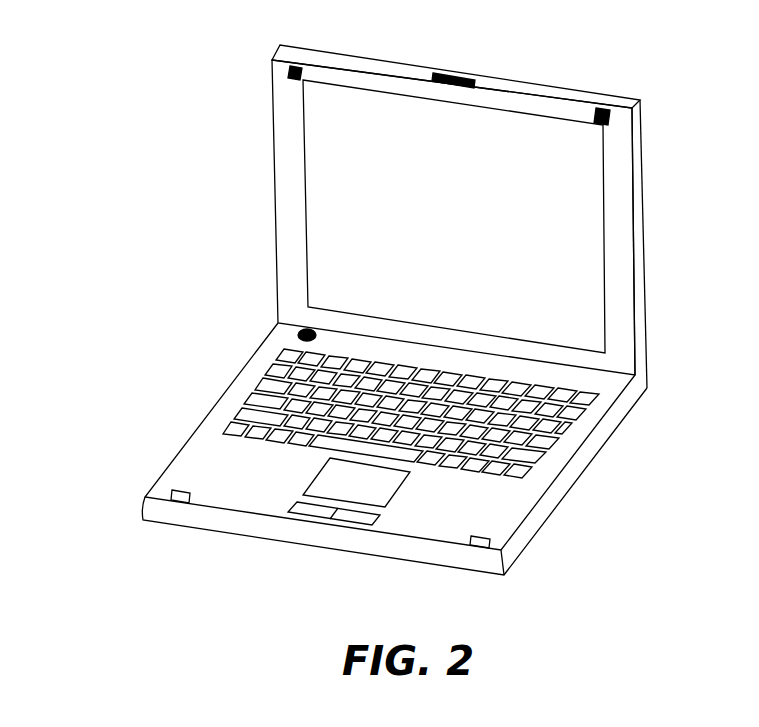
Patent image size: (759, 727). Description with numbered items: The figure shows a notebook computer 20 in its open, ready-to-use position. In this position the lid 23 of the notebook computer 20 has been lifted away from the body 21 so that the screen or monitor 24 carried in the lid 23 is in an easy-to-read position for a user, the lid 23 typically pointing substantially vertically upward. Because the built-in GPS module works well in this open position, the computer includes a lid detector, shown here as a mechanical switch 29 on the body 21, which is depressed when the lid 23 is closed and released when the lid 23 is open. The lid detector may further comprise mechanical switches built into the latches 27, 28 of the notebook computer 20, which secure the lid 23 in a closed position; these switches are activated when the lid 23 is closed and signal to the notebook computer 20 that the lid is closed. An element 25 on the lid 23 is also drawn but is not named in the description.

The notebook computer 20 is at (708, 51).
The body 21 is at (586, 474).
The lid 23 is at (623, 297).
The screen or monitor 24 is at (587, 192).
The camera 25 is at (462, 72).
The latch 27 is at (288, 76).
The latch 28 is at (178, 507).
The mechanical switch 29 is at (298, 333).